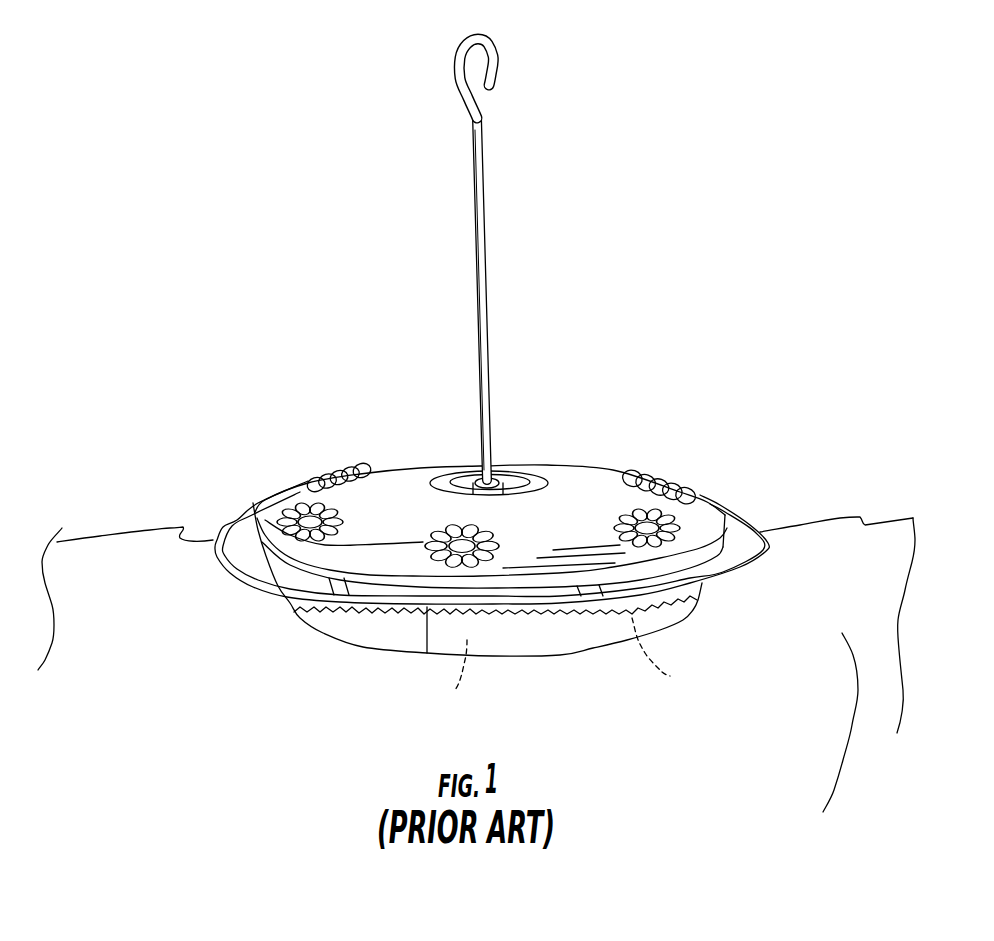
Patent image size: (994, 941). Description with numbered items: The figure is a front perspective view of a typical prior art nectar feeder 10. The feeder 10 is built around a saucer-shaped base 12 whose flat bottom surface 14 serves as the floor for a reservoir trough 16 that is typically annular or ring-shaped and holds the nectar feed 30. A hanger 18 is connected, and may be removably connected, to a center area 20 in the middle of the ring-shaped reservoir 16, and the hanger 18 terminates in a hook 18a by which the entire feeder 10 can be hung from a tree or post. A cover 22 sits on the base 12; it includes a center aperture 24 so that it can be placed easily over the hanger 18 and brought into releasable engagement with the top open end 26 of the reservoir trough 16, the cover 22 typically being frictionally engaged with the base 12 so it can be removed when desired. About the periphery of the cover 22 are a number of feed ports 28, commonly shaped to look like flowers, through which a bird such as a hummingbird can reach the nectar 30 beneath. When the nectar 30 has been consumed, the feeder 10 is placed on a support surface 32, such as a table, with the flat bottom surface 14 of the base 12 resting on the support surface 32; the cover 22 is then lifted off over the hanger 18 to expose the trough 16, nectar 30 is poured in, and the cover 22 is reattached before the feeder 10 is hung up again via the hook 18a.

The nectar feeder 10 is at (482, 372).
The saucer-shaped base 12 is at (515, 618).
The flat bottom surface 14 is at (585, 655).
The reservoir trough 16 is at (670, 676).
The hanger 18 is at (487, 228).
The hook 18a is at (498, 67).
The center area 20 is at (542, 473).
The cover 22 is at (703, 494).
The center aperture 24 is at (453, 474).
The top open end 26 is at (420, 655).
The feed ports 28 is at (320, 548).
The nectar feed 30 is at (455, 690).
The support surface 32 is at (476, 687).